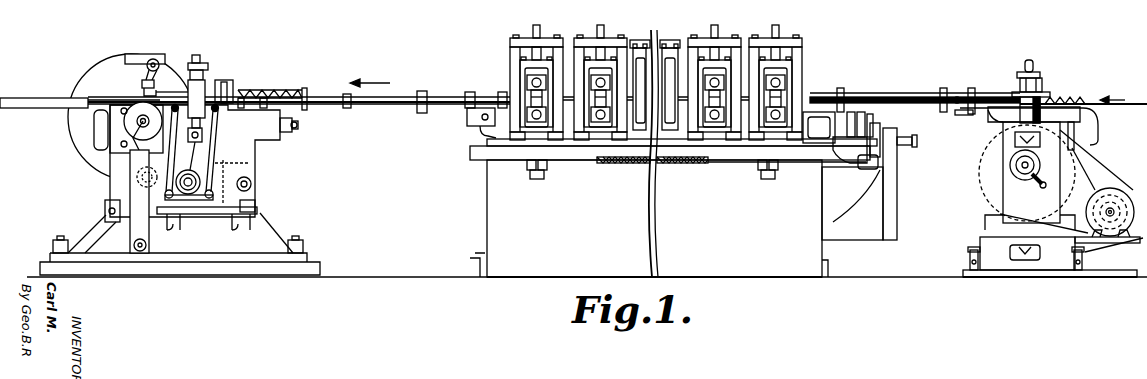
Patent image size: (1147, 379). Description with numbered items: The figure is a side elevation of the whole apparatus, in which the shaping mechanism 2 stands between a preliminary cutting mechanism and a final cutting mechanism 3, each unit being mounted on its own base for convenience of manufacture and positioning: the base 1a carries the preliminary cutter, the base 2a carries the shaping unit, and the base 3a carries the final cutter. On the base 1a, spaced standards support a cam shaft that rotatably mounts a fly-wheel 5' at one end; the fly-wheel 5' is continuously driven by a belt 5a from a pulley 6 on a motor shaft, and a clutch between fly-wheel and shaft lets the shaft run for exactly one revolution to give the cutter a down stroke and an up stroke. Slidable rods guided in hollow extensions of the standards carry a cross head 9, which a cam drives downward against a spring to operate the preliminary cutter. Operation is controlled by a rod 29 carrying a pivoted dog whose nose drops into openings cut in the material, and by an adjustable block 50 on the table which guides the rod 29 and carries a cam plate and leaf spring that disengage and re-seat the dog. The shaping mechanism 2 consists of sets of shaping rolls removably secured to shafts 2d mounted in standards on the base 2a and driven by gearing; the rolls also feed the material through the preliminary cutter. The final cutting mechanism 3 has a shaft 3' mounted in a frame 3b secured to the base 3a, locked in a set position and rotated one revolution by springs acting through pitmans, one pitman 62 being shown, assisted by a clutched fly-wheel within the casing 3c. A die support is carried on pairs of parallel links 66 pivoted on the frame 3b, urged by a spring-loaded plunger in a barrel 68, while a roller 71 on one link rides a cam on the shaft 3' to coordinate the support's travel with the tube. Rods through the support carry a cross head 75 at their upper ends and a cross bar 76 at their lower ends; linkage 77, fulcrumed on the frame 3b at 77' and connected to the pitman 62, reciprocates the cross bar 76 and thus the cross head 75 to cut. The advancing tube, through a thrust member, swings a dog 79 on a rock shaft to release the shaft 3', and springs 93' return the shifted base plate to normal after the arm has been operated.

The base 1a is at (1002, 264).
The shaping mechanism 2 is at (693, 151).
The base 2a is at (514, 278).
The shafts 2d is at (780, 85).
The final cutting mechanism 3 is at (197, 163).
The shaft 3' is at (93, 152).
The base 3a is at (270, 240).
The frame 3b is at (112, 191).
The casing 3c is at (103, 82).
The fly-wheel 5' is at (1042, 192).
The belt 5a is at (1098, 178).
The pulley 6 is at (1105, 246).
The cross head 9 is at (1037, 71).
The rod 29 is at (912, 93).
The block 50 is at (971, 89).
The pitman 62 is at (142, 128).
The parallel links 66 is at (212, 140).
The barrel 68 is at (281, 127).
The roller 71 is at (212, 160).
The cross head 75 is at (206, 62).
The cross bar 76 is at (206, 134).
The linkage 77 is at (207, 206).
The fulcrum 77' is at (255, 181).
The dog 79 is at (146, 78).
The springs 93' is at (272, 89).